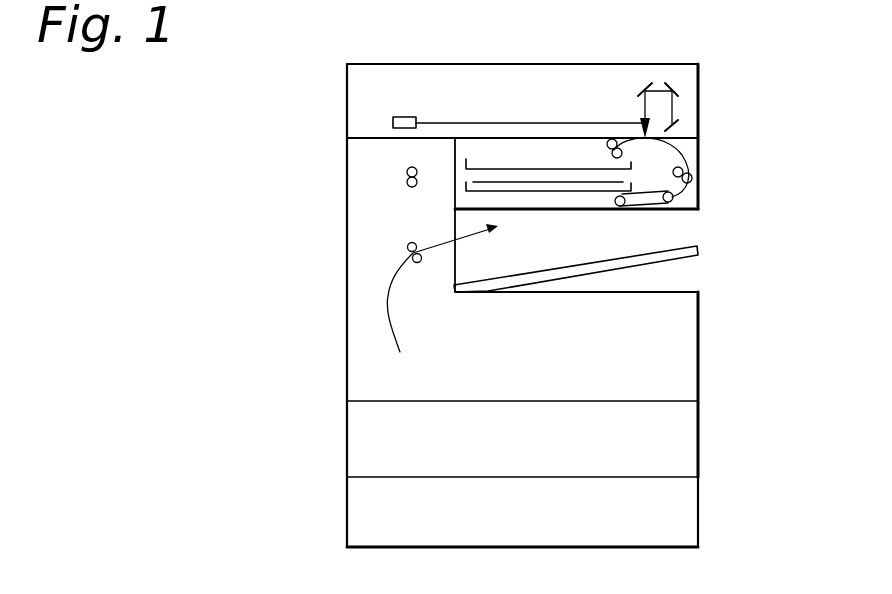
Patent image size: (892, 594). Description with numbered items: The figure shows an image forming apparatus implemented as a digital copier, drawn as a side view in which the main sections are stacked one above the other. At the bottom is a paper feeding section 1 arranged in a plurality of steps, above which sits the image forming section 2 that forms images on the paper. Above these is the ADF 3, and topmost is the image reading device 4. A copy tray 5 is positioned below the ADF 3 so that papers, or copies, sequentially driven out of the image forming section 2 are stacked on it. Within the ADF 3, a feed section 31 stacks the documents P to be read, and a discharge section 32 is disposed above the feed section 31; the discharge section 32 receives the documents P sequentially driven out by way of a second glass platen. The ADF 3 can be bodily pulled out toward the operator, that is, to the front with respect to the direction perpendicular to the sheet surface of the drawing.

The paper feeding section 1 is at (705, 476).
The image forming section 2 is at (705, 357).
The ADF 3 is at (706, 174).
The image reading device 4 is at (707, 65).
The copy tray 5 is at (682, 257).
The feed section 31 is at (571, 192).
The discharge section 32 is at (585, 162).
The documents P is at (487, 182).